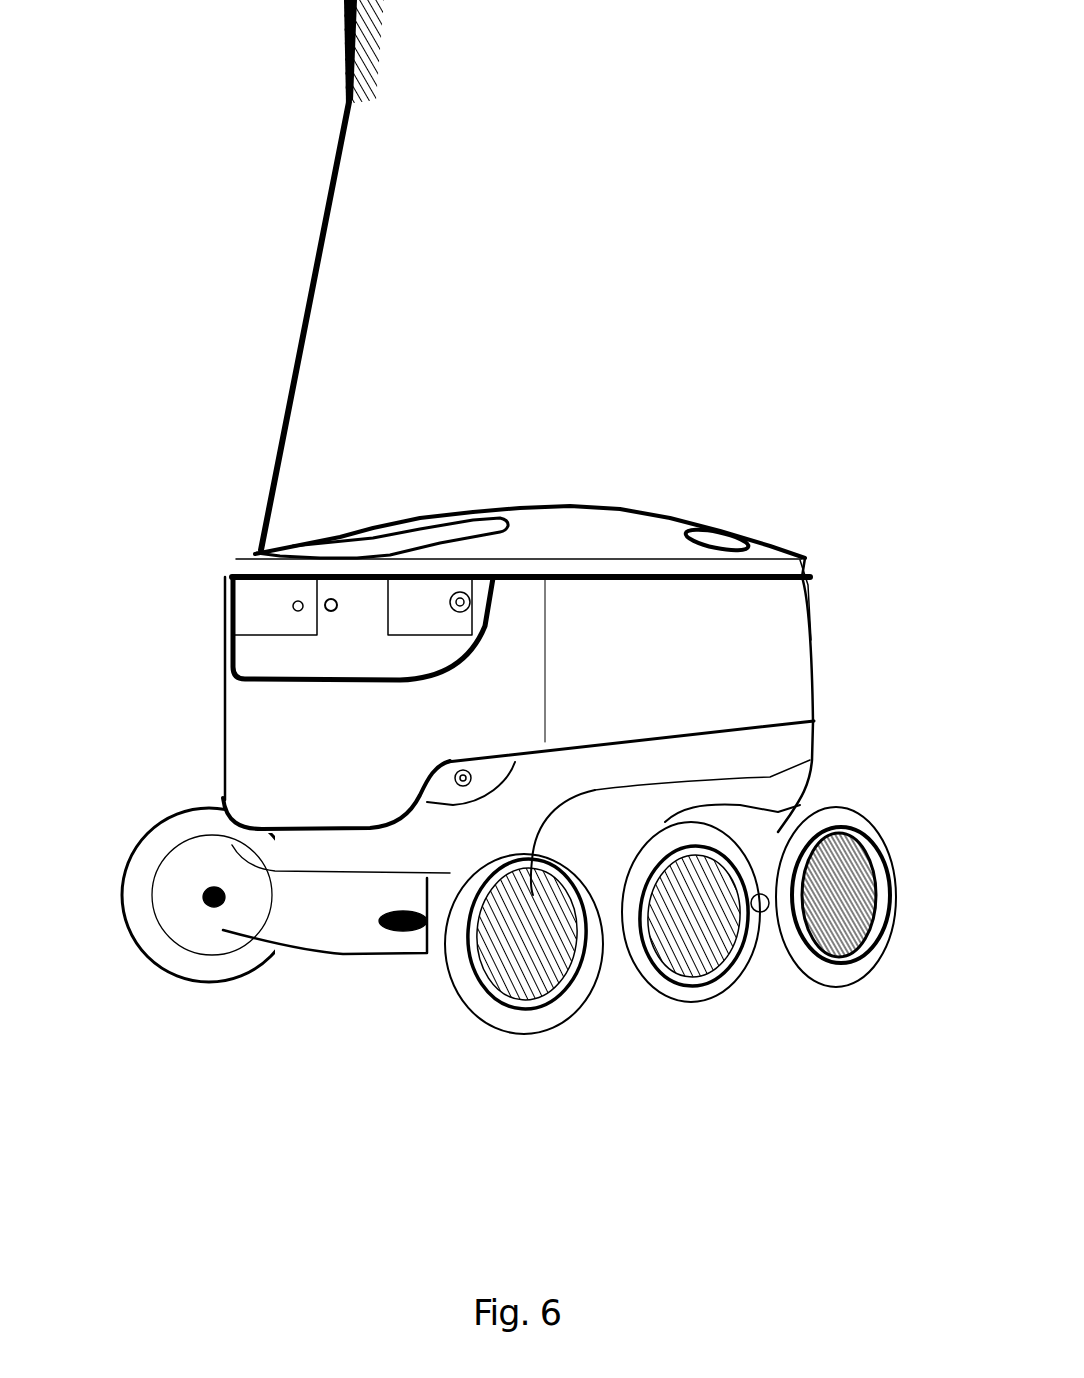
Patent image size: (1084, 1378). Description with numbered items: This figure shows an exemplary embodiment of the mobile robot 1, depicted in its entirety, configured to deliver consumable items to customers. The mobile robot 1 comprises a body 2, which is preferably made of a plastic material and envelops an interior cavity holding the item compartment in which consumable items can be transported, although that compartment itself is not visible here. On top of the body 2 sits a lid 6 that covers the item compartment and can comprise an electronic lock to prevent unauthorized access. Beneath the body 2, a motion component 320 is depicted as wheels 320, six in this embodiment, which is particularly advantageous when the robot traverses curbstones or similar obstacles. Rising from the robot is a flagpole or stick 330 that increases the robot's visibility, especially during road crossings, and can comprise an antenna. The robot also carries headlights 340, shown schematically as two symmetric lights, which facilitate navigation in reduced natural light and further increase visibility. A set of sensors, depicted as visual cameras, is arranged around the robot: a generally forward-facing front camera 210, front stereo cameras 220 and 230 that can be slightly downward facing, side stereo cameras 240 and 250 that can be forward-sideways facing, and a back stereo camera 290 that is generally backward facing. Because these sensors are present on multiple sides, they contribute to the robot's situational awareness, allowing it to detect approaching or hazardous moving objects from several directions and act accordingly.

The mobile robot 1 is at (527, 420).
The body 2 is at (207, 723).
The lid 6 is at (738, 526).
The front camera 210 is at (297, 630).
The front stereo camera 220 is at (280, 595).
The front stereo camera 230 is at (345, 592).
The side stereo camera 240 is at (481, 582).
The side stereo camera 250 is at (482, 755).
The back stereo camera 290 is at (818, 578).
The motion component 320 is at (783, 997).
The flagpole 330 is at (318, 88).
The robot headlights 340 is at (375, 938).